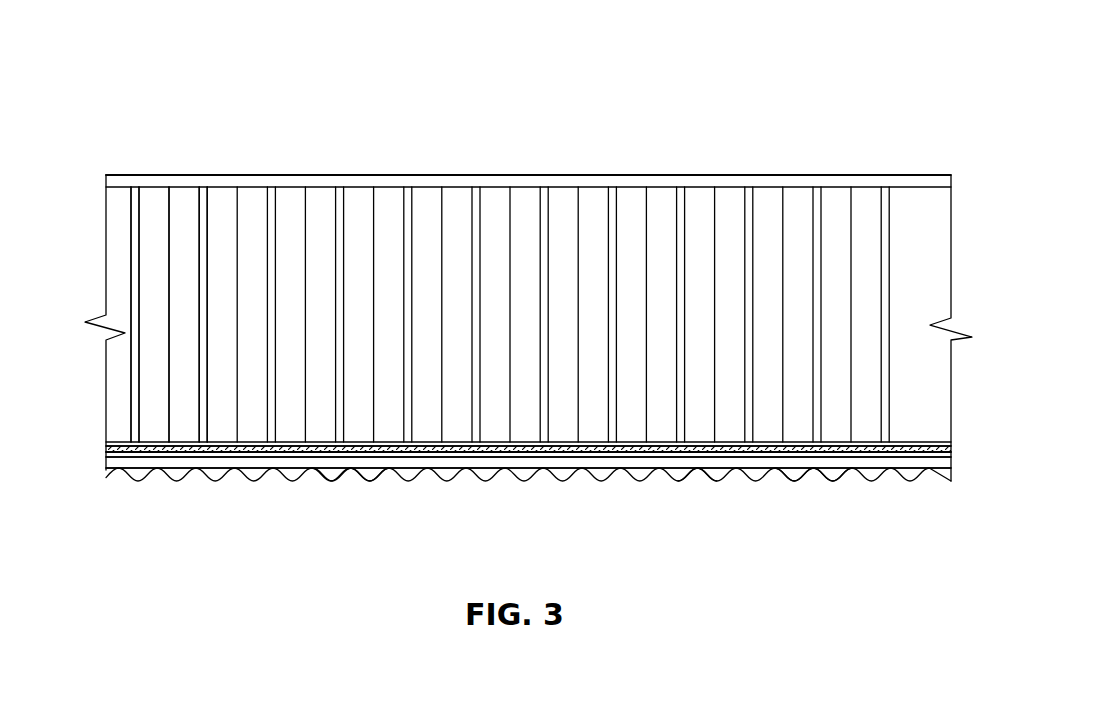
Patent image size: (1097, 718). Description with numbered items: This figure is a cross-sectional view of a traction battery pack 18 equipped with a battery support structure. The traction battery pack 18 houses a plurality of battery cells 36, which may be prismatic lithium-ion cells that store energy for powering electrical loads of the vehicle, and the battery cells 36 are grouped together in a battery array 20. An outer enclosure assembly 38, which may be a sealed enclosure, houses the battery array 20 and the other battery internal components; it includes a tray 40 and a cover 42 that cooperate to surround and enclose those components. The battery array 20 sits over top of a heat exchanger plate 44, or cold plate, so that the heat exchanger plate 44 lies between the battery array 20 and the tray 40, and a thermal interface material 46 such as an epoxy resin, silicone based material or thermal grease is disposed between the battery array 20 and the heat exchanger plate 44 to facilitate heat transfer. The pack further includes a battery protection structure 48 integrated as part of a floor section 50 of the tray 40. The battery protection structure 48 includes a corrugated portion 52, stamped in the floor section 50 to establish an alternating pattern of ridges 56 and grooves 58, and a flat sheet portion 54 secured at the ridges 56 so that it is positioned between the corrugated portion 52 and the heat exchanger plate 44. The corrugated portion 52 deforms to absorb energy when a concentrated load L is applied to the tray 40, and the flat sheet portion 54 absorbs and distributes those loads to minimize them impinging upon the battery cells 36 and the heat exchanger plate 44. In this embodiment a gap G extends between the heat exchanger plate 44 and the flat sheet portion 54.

The traction battery pack 18 is at (905, 64).
The battery array 20 is at (358, 198).
The battery cells 36 is at (217, 195).
The outer enclosure assembly 38 is at (906, 170).
The cover 42 is at (748, 175).
The flat sheet portion 54 is at (140, 467).
The battery protection structure 48 is at (100, 452).
The thermal interface material 46 is at (485, 448).
The heat exchanger plate 44 is at (638, 465).
The tray 40 is at (256, 492).
The corrugated portion 52 is at (331, 490).
The ridges 56 is at (389, 472).
The grooves 58 is at (717, 478).
The floor section 50 is at (852, 484).
The concentrated load L is at (523, 492).
The gap G is at (927, 425).